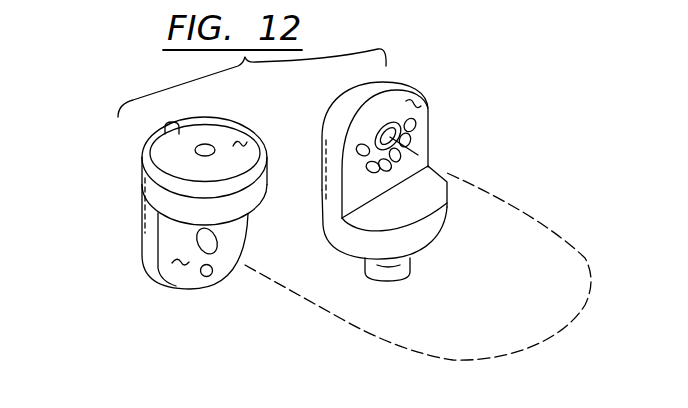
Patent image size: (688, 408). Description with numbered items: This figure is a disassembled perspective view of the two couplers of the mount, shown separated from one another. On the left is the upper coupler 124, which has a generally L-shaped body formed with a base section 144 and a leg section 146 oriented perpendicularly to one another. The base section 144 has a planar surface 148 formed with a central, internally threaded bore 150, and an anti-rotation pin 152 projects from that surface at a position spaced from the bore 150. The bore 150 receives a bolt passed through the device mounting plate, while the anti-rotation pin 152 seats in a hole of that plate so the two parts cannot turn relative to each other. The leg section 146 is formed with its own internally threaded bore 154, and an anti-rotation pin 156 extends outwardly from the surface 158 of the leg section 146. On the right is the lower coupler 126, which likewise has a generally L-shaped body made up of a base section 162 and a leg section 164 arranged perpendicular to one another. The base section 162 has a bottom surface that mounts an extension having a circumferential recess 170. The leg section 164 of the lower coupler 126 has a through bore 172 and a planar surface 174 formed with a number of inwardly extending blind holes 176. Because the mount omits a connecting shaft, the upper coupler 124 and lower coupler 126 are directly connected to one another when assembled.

The upper coupler 124 is at (90, 237).
The base section 144 is at (270, 179).
The leg section 146 is at (147, 260).
The planar surface 148 is at (243, 135).
The internally threaded bore 150 is at (195, 150).
The anti-rotation pin 152 is at (166, 126).
The internally threaded bore 154 is at (217, 238).
The anti-rotation pin 156 is at (212, 275).
The surface 158 is at (180, 264).
The lower coupler 126 is at (521, 77).
The base section 162 is at (437, 226).
The leg section 164 is at (383, 84).
The circumferential recess 170 is at (407, 275).
The through bore 172 is at (403, 121).
The planar surface 174 is at (422, 104).
The blind holes 176 is at (414, 124).